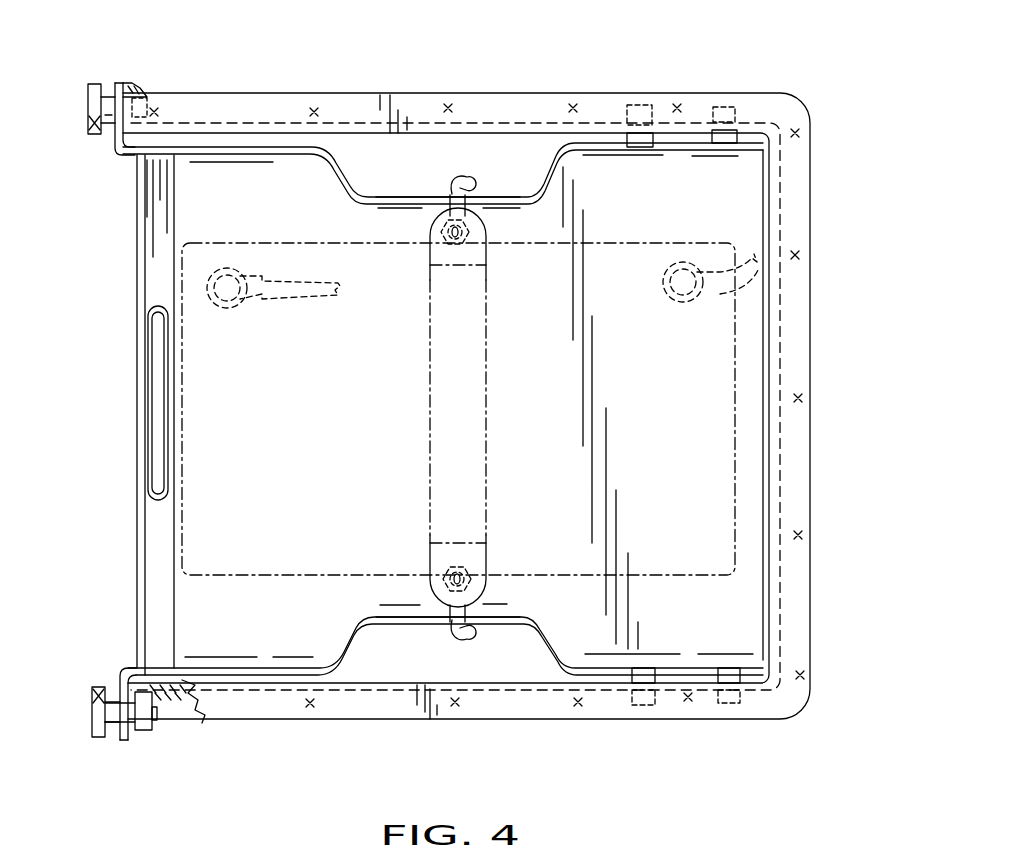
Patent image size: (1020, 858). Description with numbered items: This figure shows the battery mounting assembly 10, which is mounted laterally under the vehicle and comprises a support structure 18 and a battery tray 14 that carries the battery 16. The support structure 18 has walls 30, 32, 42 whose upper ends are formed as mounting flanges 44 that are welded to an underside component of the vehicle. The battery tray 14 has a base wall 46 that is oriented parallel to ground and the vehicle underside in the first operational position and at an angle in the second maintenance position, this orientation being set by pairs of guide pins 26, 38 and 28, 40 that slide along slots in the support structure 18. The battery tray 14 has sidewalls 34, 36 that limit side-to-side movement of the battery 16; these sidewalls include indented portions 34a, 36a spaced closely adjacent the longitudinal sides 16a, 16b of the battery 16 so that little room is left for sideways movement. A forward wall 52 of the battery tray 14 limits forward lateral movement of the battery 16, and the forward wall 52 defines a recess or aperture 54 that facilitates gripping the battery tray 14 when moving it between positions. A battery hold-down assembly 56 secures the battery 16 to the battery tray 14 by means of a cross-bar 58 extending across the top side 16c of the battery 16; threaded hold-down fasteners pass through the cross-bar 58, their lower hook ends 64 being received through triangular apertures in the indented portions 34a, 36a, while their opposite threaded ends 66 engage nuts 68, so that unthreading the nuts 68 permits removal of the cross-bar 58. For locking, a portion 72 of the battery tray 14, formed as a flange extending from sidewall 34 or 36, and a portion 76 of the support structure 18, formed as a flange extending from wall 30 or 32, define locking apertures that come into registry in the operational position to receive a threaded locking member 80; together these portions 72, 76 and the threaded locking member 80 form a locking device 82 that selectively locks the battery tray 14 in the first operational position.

The battery mounting assembly 10 is at (615, 70).
The battery tray 14 is at (273, 669).
The battery 16 is at (707, 351).
The longitudinal side of the battery 16a is at (640, 578).
The longitudinal side of the battery 16b is at (617, 240).
The top side of the battery 16c is at (322, 562).
The support structure 18 is at (817, 628).
The guide pin 26 is at (731, 674).
The guide pin 28 is at (723, 133).
The sidewall of the support structure 30 is at (182, 690).
The sidewall of the support structure 32 is at (530, 127).
The sidewall of the battery tray 34 is at (250, 670).
The indented portion 34a is at (387, 620).
The sidewall of the battery tray 36 is at (265, 147).
The indented portion 36a is at (387, 197).
The guide pin 38 is at (647, 676).
The guide pin 40 is at (640, 140).
The wall of the support structure 42 is at (783, 453).
The mounting flange 44 is at (341, 100).
The base wall 46 is at (745, 212).
The forward wall 52 is at (157, 235).
The recess or aperture 54 is at (155, 411).
The battery hold-down assembly 56 is at (483, 409).
The cross-bar 58 is at (475, 463).
The hook end 64 is at (465, 177).
The threaded end 66 is at (446, 240).
The nut 68 is at (465, 243).
The portion of the battery tray 72 is at (117, 82).
The portion of the support structure 76 is at (128, 82).
The threaded locking member 80 is at (91, 97).
The locking device 82 is at (99, 147).